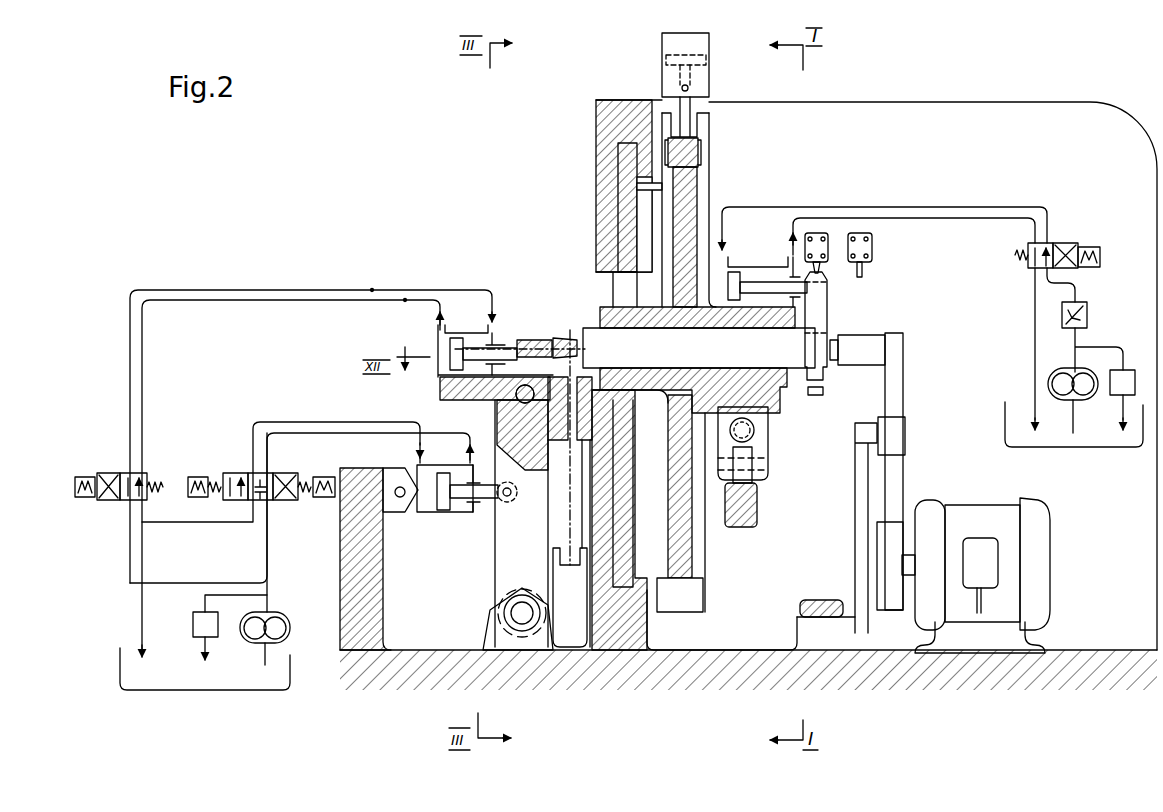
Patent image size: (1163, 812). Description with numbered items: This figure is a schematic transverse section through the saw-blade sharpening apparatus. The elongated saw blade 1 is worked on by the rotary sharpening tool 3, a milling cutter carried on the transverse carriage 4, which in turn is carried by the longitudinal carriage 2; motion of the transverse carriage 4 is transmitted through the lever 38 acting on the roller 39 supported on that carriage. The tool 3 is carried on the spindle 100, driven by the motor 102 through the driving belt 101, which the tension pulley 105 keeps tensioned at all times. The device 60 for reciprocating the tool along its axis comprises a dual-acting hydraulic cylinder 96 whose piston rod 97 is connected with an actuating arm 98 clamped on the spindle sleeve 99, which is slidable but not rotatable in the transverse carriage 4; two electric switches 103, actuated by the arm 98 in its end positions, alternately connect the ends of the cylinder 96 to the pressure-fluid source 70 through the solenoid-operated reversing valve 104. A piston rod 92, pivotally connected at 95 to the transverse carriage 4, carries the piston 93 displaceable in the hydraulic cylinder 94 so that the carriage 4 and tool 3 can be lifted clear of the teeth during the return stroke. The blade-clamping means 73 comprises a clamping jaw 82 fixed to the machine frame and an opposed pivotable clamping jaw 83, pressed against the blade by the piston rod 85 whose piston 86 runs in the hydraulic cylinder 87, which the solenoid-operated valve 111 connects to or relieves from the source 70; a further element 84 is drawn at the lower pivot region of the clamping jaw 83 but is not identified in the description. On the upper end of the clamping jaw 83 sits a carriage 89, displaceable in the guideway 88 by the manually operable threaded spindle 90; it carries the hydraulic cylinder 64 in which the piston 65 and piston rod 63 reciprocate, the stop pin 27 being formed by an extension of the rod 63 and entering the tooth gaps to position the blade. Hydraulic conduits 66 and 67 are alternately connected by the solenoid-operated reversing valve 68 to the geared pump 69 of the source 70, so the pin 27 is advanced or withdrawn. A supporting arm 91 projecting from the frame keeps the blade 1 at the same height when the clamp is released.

The saw blade 1 is at (570, 478).
The longitudinal carriage 2 is at (628, 190).
The rotary sharpening tool 3 is at (556, 338).
The transverse carriage 4 is at (687, 173).
The stop pin 27 is at (530, 357).
The lever 38 is at (742, 497).
The roller 39 is at (748, 456).
The device for reciprocating the rotary tool 60 is at (771, 256).
The piston rod 63 is at (477, 353).
The hydraulic cylinder 64 is at (445, 342).
The piston 65 is at (457, 350).
The hydraulic conduit 66 is at (405, 300).
The hydraulic conduit 67 is at (372, 290).
The solenoid-operated reversing valve 68 is at (140, 478).
The geared pump 69 is at (290, 628).
The source of pressurized fluid 70 is at (247, 680).
The blade-clamping means 73 is at (490, 576).
The clamping jaw 82 is at (583, 482).
The clamping jaw 83 is at (502, 583).
The pulley 84 is at (522, 615).
The piston rod 85 is at (458, 490).
The piston 86 is at (443, 498).
The hydraulic cylinder 87 is at (423, 500).
The guideway 88 is at (527, 460).
The carriage 89 is at (445, 384).
The threaded spindle 90 is at (517, 392).
The supporting arm 91 is at (570, 622).
The piston rod 92 is at (687, 107).
The piston 93 is at (706, 60).
The hydraulic cylinder 94 is at (703, 38).
The pivot connection 95 is at (690, 148).
The dual-acting hydraulic cylinder 96 is at (755, 275).
The piston rod 97 is at (825, 289).
The actuating arm 98 is at (815, 308).
The spindle sleeve 99 is at (778, 358).
The spindle 100 is at (835, 352).
The driving belt 101 is at (893, 380).
The motor 102 is at (1055, 550).
The electric switches 103 is at (857, 248).
The solenoid-operated reversing valve 104 is at (1055, 248).
The tension pulley 105 is at (905, 427).
The solenoid-operated valve 111 is at (247, 478).